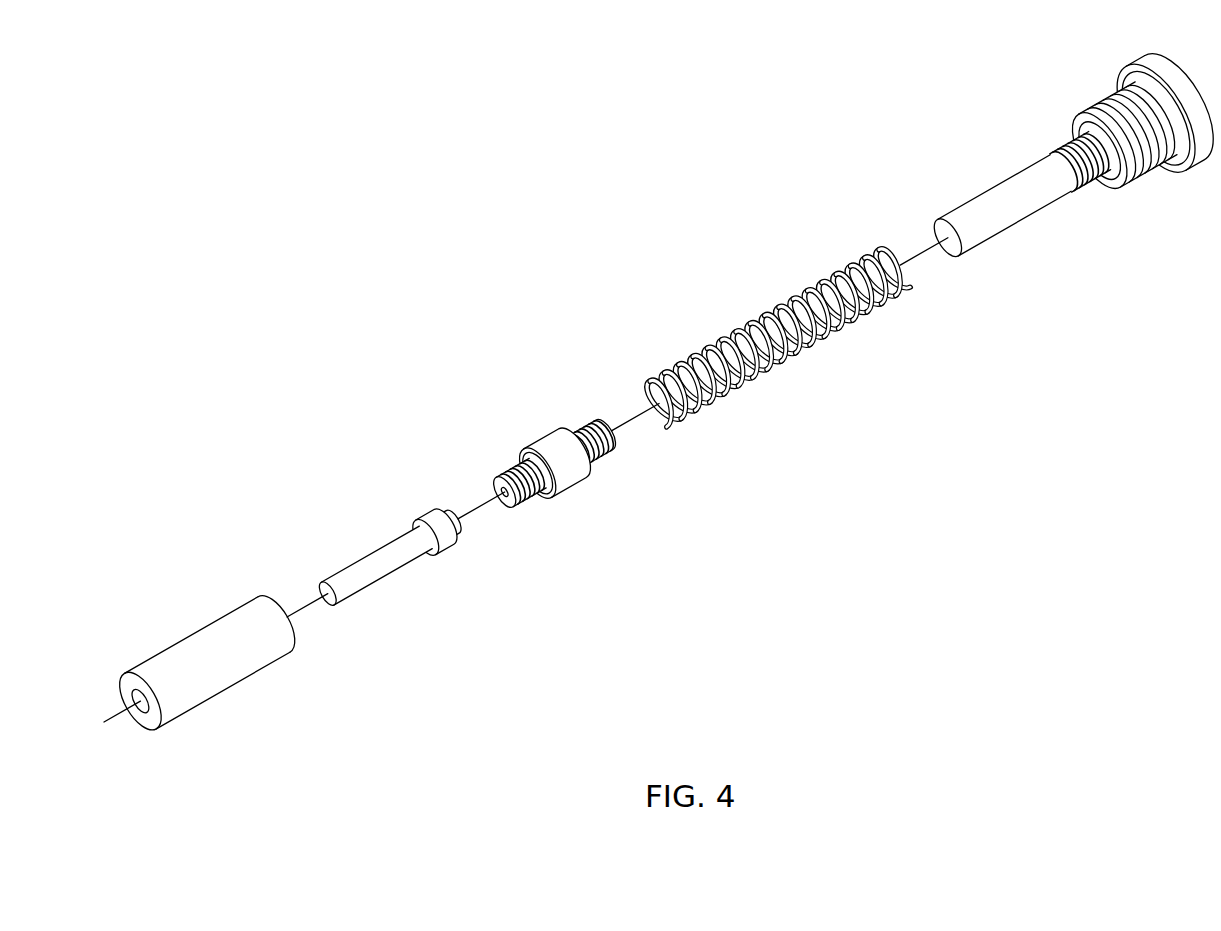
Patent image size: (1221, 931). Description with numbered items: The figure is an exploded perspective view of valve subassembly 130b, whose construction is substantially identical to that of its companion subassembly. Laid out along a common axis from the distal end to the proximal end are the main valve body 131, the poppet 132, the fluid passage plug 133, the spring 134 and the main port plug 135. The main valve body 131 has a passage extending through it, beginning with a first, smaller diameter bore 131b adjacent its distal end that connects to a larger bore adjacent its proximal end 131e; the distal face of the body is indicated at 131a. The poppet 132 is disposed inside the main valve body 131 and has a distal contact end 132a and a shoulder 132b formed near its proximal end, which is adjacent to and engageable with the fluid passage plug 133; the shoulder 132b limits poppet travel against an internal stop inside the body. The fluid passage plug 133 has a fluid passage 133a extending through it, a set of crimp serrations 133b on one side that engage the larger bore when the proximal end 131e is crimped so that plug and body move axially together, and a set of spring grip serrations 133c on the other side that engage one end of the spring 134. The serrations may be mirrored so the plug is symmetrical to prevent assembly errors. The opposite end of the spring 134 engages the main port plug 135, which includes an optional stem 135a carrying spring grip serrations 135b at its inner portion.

The valve subassembly 130b is at (349, 159).
The main valve body 131 is at (202, 685).
The sleeve front end face 131a is at (148, 727).
The first, smaller diameter bore 131b is at (129, 713).
The proximal end 131e is at (272, 652).
The poppet 132 is at (382, 575).
The distal end 132a is at (327, 598).
The shoulder 132b is at (432, 555).
The fluid passage plug 133 is at (548, 460).
The fluid passage 133a is at (505, 495).
The crimp serrations 133b is at (517, 468).
The spring grip serrations 133c is at (587, 423).
The spring 134 is at (798, 353).
The main port plug 135 is at (1075, 151).
The stem 135a is at (1007, 217).
The spring grip serrations 135b is at (1080, 183).